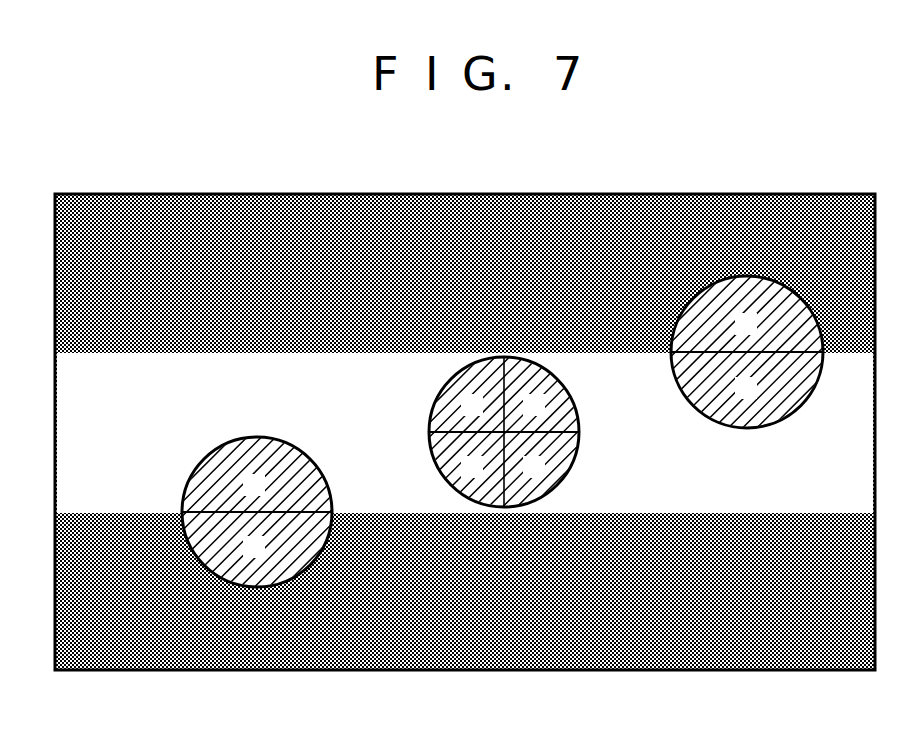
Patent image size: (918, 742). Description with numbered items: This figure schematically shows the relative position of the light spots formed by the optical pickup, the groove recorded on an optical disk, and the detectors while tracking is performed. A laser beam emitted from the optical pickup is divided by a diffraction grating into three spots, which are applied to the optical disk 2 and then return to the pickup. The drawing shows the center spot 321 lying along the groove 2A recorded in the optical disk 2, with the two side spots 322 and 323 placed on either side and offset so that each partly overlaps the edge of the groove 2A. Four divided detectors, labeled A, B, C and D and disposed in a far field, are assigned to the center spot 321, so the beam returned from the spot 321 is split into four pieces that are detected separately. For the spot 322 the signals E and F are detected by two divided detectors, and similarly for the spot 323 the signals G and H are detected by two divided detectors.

The optical disk 2 is at (485, 672).
The groove 2A is at (650, 472).
The center spot 321 is at (505, 508).
The spot 322 is at (258, 588).
The spot 323 is at (745, 428).